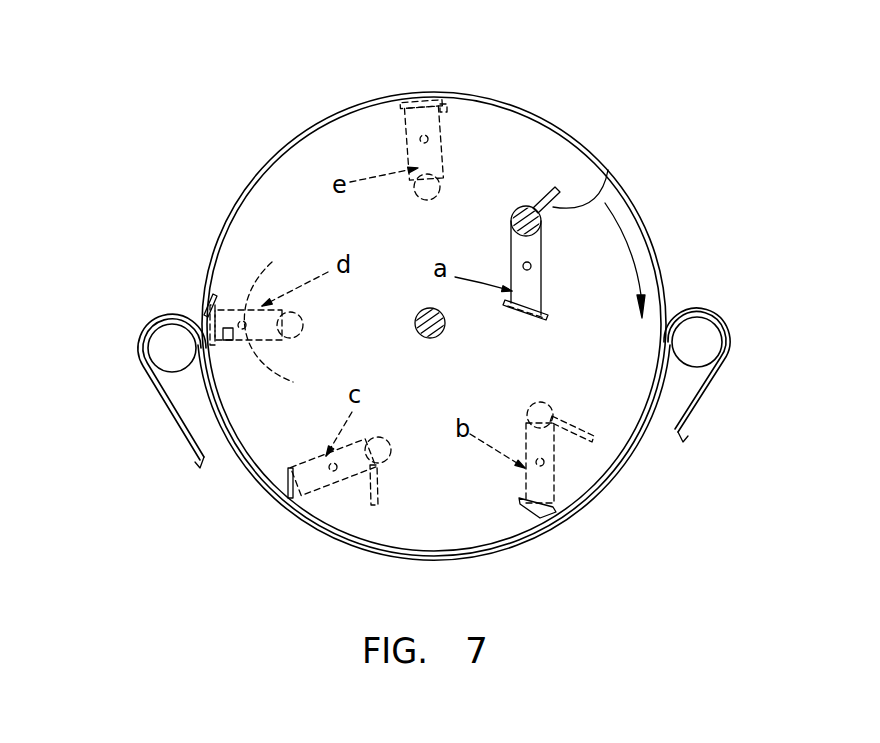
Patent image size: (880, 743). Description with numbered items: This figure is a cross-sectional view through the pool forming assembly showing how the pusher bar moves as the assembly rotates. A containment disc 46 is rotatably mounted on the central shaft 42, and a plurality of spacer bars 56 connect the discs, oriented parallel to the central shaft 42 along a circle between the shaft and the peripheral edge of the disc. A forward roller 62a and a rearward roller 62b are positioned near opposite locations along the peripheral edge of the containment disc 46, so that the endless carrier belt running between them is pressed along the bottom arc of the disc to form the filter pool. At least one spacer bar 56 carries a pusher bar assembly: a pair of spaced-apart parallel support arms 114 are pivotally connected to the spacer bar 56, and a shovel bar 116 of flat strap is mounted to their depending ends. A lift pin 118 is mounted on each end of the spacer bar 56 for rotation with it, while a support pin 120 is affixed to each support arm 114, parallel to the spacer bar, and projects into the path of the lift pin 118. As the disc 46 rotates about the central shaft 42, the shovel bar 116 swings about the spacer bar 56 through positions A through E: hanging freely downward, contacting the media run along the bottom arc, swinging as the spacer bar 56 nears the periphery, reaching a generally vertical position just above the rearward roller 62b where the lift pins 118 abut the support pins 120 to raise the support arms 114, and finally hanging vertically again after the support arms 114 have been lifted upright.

The containment disc 46 is at (520, 127).
The central shaft 42 is at (424, 308).
The spacer bar 56 is at (517, 208).
The support arm 114 is at (455, 148).
The shovel bar 116 is at (195, 312).
The lift pin 118 is at (400, 122).
The support pin 120 is at (440, 108).
The forward roller 62a is at (712, 322).
The rearward roller 62b is at (167, 348).